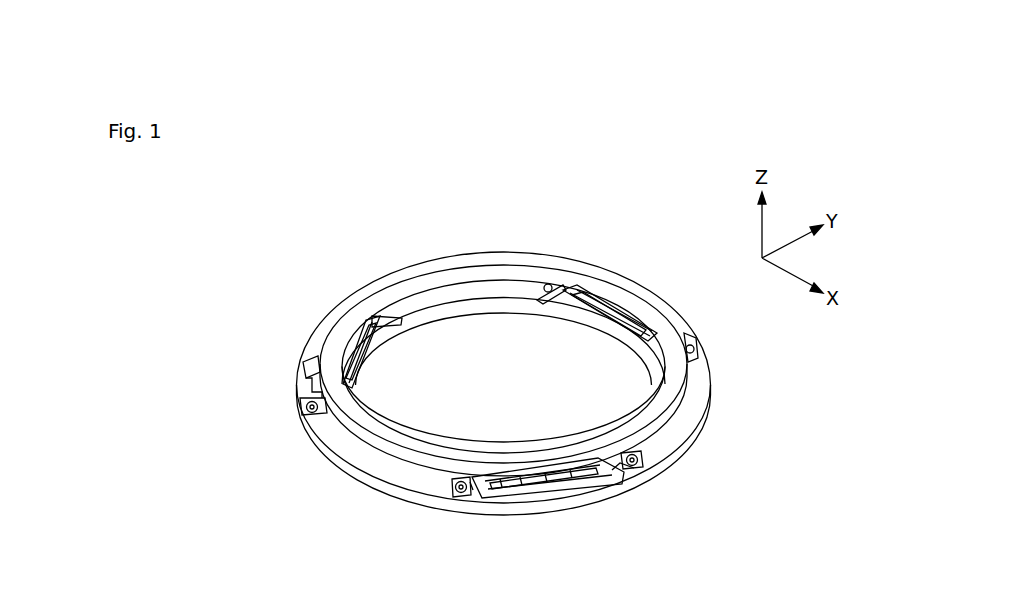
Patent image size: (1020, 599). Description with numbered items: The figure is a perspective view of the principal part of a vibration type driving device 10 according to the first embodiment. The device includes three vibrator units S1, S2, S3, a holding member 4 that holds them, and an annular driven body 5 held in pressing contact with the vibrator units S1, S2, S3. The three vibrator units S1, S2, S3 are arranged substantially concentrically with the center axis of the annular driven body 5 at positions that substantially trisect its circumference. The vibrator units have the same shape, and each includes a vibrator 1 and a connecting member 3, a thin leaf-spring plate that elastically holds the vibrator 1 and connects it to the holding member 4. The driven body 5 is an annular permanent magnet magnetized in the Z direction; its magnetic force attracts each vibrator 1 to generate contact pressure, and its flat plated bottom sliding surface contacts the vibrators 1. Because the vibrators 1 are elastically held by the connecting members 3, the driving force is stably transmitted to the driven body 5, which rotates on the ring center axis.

The vibration type driving device 10 is at (225, 585).
The holding member 4 is at (677, 428).
The driven body 5 is at (398, 278).
The vibrator 1 is at (617, 312).
The connecting member 3 is at (567, 277).
The vibrator unit S1 is at (597, 297).
The vibrator unit S2 is at (550, 480).
The vibrator unit S3 is at (360, 340).